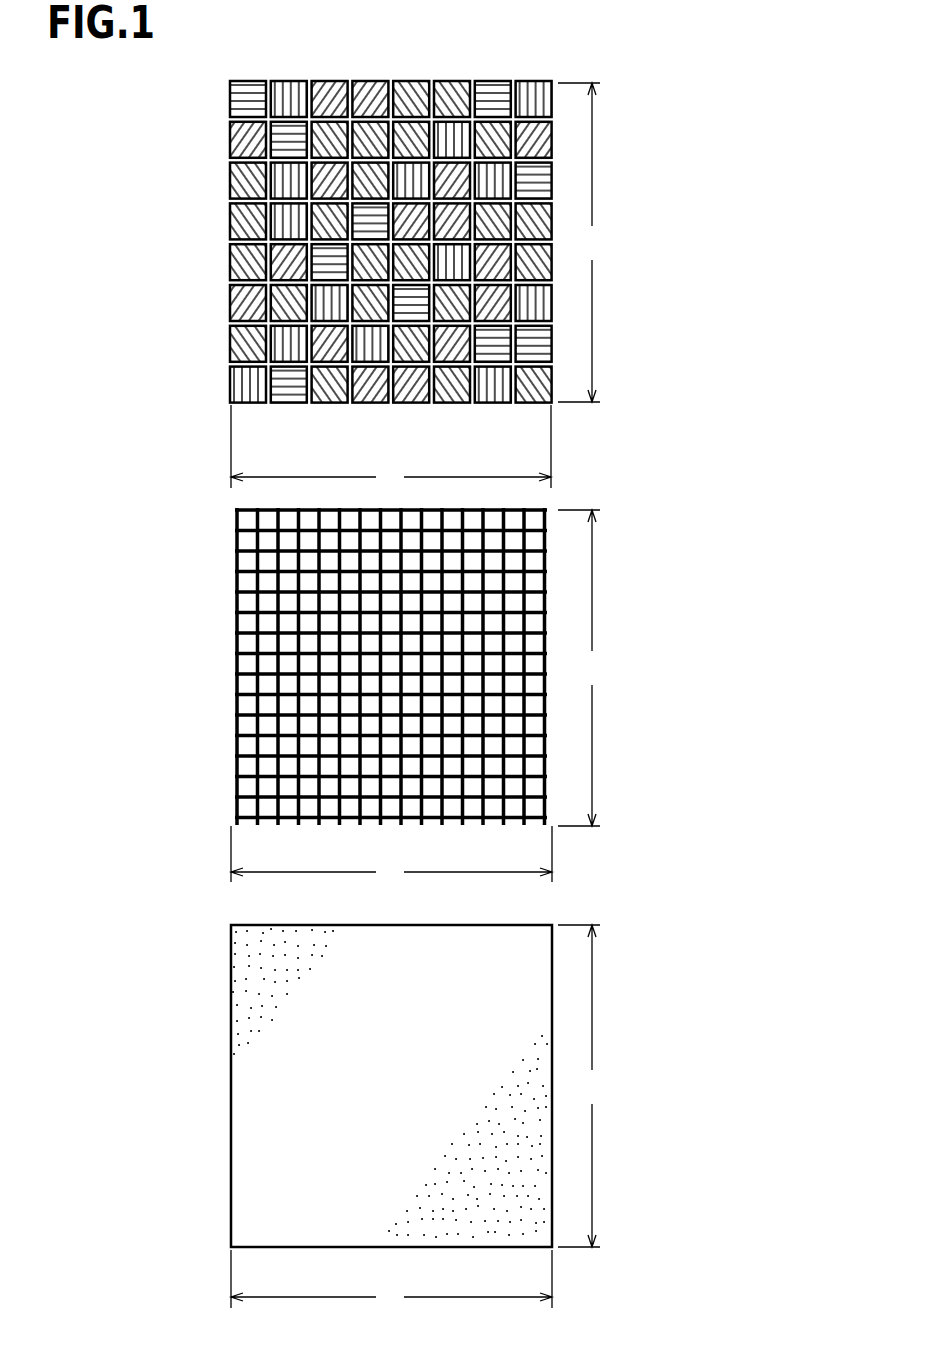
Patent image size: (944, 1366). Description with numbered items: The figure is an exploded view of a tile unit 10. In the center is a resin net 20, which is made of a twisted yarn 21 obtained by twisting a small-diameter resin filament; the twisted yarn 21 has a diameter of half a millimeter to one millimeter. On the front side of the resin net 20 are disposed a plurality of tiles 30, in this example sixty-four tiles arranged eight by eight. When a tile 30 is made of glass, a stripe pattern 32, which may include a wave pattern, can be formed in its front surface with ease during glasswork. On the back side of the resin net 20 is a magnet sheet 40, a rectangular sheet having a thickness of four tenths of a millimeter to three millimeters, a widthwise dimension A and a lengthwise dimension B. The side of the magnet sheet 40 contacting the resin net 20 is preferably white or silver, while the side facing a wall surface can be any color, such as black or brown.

The tile unit 10 is at (129, 185).
The resin net 20 is at (339, 690).
The twisted yarn 21 is at (235, 538).
The tile 30 is at (341, 243).
The stripe pattern 32 is at (248, 97).
The magnet sheet 40 is at (230, 1063).